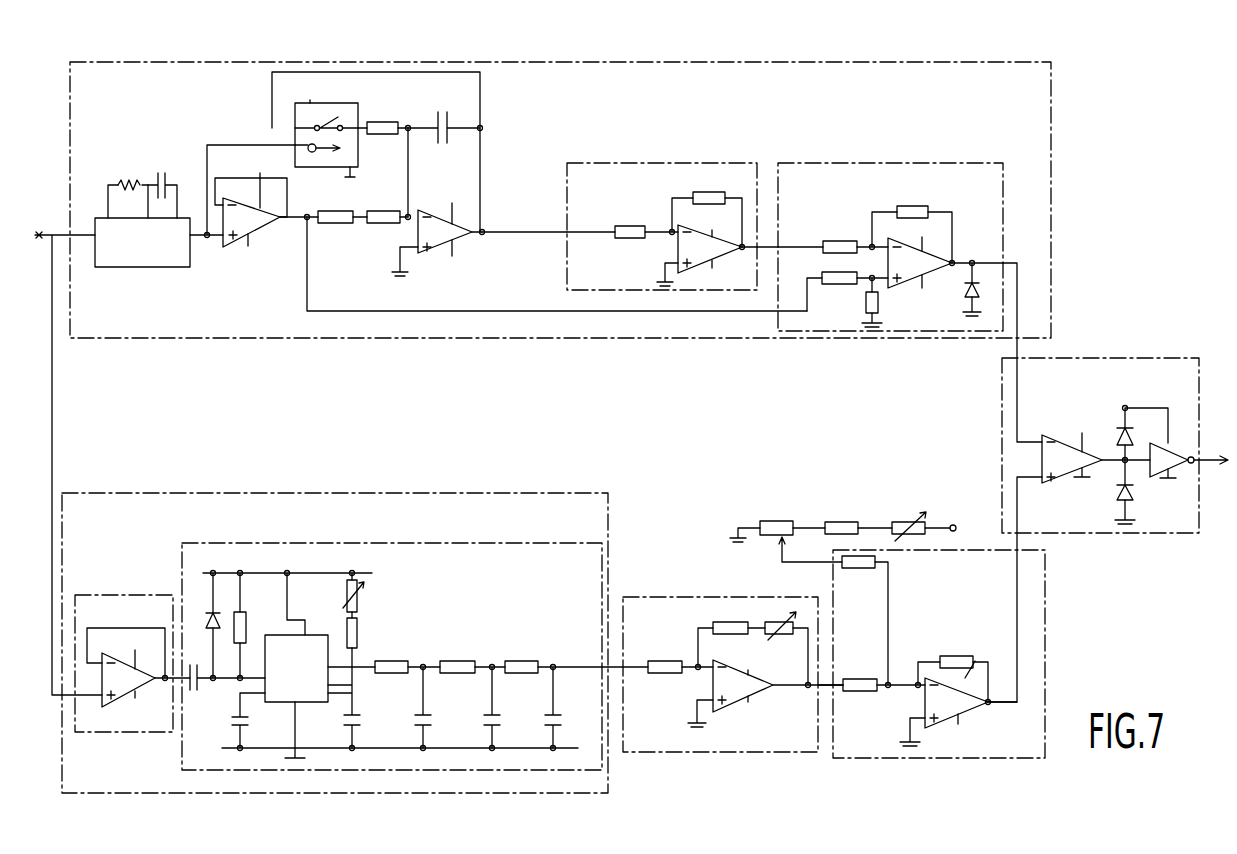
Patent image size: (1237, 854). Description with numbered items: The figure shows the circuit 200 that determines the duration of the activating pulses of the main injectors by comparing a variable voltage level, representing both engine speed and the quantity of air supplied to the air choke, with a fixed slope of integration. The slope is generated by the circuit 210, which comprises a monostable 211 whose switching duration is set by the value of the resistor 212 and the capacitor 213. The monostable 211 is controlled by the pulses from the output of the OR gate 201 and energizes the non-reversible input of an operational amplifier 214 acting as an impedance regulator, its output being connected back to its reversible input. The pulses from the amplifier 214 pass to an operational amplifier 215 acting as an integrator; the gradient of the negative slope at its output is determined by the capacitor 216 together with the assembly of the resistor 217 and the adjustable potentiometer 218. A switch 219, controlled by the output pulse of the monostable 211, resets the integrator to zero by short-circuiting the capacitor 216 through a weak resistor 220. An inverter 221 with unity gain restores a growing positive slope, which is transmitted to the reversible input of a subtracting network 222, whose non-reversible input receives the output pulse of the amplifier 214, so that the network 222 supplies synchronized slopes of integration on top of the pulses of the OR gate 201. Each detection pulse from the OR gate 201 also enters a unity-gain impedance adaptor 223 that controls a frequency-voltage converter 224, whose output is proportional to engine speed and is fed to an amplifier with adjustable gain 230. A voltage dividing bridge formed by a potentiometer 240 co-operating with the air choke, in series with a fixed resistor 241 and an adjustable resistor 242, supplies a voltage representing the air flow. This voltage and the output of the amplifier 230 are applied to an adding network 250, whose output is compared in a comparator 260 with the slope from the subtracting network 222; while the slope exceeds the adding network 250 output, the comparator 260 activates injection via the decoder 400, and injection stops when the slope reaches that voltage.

The circuit 200 is at (1119, 210).
The OR gate 201 is at (65, 451).
The circuit 210 is at (1054, 298).
The monostable 211 is at (138, 267).
The resistor 212 is at (122, 182).
The capacitor 213 is at (160, 172).
The operational amplifier 214 is at (233, 248).
The operational amplifier 215 is at (430, 252).
The capacitor 216 is at (452, 122).
The resistor 217 is at (383, 224).
The adjustable potentiometer 218 is at (333, 224).
The switch 219 is at (295, 112).
The weak resistor 220 is at (378, 121).
The inverter 221 is at (656, 163).
The subtracting network 222 is at (886, 163).
The impedance adaptor 223 is at (130, 732).
The frequency-voltage converter 224 is at (246, 543).
The amplifier with adjustable gain 230 is at (680, 597).
The potentiometer 240 is at (778, 521).
The fixed resistor 241 is at (840, 521).
The adjustable resistor 242 is at (903, 521).
The adding network 250 is at (1046, 592).
The comparator 260 is at (1103, 358).
The decoder 400 is at (1211, 447).